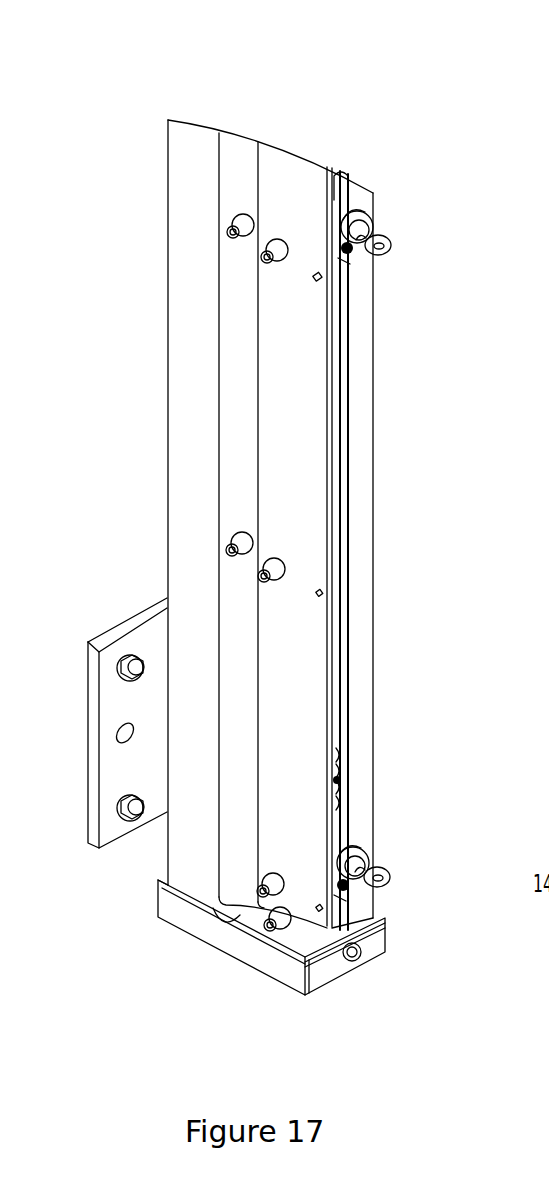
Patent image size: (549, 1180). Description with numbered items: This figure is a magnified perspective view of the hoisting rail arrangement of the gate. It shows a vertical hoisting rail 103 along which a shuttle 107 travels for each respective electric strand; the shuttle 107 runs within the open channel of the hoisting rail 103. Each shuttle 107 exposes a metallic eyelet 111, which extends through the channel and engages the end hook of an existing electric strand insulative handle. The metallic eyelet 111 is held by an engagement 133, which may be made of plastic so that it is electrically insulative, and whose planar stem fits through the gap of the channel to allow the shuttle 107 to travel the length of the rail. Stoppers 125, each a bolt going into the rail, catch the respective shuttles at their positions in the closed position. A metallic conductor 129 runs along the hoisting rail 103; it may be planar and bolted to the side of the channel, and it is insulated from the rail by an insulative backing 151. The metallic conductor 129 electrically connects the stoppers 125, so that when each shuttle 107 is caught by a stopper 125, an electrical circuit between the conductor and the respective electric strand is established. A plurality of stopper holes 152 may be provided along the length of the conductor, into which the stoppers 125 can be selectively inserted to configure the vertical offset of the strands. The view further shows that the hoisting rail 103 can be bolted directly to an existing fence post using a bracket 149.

The hoisting rail 103 is at (290, 97).
The shuttle 107 is at (372, 190).
The engagement 133 is at (400, 219).
The metallic eyelet 111 is at (390, 245).
The stopper 125 is at (343, 263).
The stopper hole 152 is at (332, 593).
The metallic conductor 129 is at (293, 648).
The insulative backing 151 is at (238, 812).
The bracket 149 is at (97, 748).